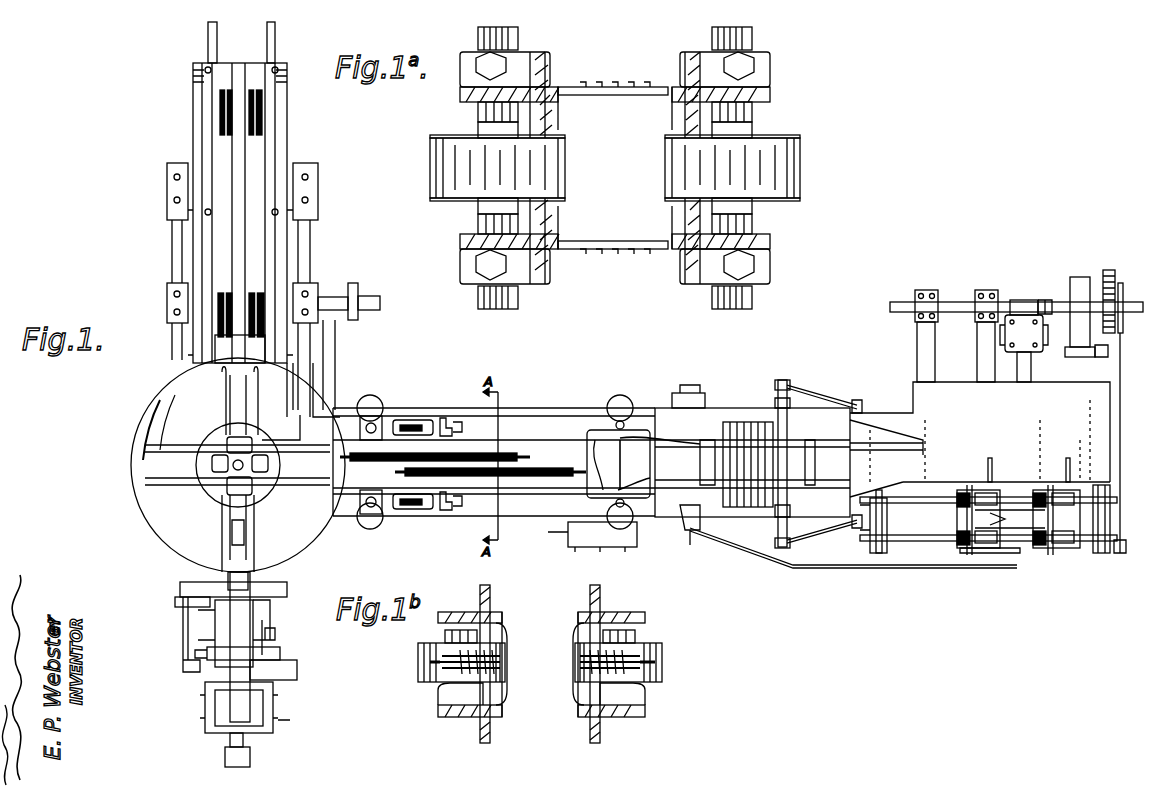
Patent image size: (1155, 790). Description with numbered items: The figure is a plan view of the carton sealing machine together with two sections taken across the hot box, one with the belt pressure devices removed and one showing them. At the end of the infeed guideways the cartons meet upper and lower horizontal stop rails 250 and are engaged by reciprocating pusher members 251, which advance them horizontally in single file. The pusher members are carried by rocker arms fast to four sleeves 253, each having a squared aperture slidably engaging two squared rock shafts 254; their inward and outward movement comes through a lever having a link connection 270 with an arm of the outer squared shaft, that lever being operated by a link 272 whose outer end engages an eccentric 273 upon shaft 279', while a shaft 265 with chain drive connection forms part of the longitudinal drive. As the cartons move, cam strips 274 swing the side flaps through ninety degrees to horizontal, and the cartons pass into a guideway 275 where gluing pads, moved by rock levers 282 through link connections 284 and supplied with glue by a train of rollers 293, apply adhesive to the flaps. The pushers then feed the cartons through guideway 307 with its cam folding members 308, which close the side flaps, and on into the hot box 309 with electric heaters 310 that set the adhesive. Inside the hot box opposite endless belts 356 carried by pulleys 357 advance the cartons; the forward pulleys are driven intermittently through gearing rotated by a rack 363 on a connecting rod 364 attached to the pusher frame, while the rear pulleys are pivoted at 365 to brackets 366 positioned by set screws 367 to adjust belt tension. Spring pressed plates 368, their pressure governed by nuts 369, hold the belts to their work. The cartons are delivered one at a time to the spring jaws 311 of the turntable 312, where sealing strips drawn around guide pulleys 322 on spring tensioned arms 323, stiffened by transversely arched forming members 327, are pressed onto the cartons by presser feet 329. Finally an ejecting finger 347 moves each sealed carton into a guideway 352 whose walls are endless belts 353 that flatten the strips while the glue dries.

In FIG. 1, the endless belts 353 is at (250, 144).
In FIG. 1, the guideway 352 is at (268, 347).
In FIG. 1, the turntable 312 is at (222, 478).
In FIG. 1, the spring jaws 311 is at (205, 438).
In FIG. 1, the finger 347 is at (262, 440).
In FIG. 1, the presser feet 329 is at (230, 520).
In FIG. 1, the transversely arched forming members 327 is at (250, 636).
In FIG. 1, the spring tensioned arms 323 is at (280, 668).
In FIG. 1, the guide pulleys 322 is at (252, 742).
In FIG. 1, the endless belts 356 is at (568, 408).
In FIG. 1A, the endless belts 356 is at (664, 168).
In FIG. 1B, the endless belts 356 is at (420, 671).
In FIG. 1, the pulleys 357 is at (378, 405).
In FIG. 1A, the pulleys 357 is at (432, 140).
In FIG. 1B, the pulleys 357 is at (420, 648).
In FIG. 1, the pivot 365 is at (368, 415).
In FIG. 1, the brackets 366 is at (412, 420).
In FIG. 1, the set screws 367 is at (445, 418).
In FIG. 1, the electric heaters 310 is at (515, 452).
In FIG. 1, the hot box 309 is at (555, 468).
In FIG. 1A, the hot box 309 is at (562, 85).
In FIG. 1, the guideway 307 is at (618, 464).
In FIG. 1, the cam folding members 308 is at (659, 463).
In FIG. 1, the rack 363 is at (568, 530).
In FIG. 1, the train of rollers 293 is at (732, 420).
In FIG. 1, the link connections 284 is at (778, 400).
In FIG. 1, the rock levers 282 is at (812, 393).
In FIG. 1, the guideway 275 is at (845, 449).
In FIG. 1, the cam strips 274 is at (905, 480).
In FIG. 1, the stop rails 250 is at (1018, 482).
In FIG. 1, the pusher members 251 is at (990, 458).
In FIG. 1, the shaft 279' is at (1015, 320).
In FIG. 1, the shaft 265 is at (1025, 360).
In FIG. 1, the eccentric 273 is at (1105, 272).
In FIG. 1, the link 272 is at (1118, 372).
In FIG. 1, the sleeves 253 is at (960, 540).
In FIG. 1, the squared rock shafts 254 is at (880, 520).
In FIG. 1, the link connection 270 is at (1095, 548).
In FIG. 1, the connecting rod 364 is at (795, 566).
In FIG. 1B, the spring pressed plates 368 is at (505, 652).
In FIG. 1B, the nuts 369 is at (432, 688).